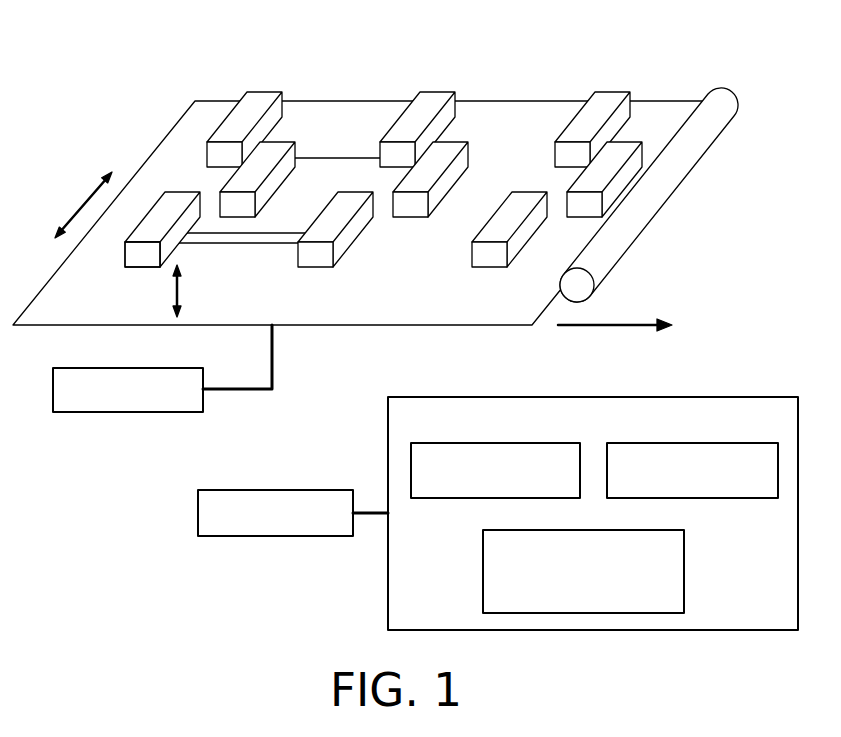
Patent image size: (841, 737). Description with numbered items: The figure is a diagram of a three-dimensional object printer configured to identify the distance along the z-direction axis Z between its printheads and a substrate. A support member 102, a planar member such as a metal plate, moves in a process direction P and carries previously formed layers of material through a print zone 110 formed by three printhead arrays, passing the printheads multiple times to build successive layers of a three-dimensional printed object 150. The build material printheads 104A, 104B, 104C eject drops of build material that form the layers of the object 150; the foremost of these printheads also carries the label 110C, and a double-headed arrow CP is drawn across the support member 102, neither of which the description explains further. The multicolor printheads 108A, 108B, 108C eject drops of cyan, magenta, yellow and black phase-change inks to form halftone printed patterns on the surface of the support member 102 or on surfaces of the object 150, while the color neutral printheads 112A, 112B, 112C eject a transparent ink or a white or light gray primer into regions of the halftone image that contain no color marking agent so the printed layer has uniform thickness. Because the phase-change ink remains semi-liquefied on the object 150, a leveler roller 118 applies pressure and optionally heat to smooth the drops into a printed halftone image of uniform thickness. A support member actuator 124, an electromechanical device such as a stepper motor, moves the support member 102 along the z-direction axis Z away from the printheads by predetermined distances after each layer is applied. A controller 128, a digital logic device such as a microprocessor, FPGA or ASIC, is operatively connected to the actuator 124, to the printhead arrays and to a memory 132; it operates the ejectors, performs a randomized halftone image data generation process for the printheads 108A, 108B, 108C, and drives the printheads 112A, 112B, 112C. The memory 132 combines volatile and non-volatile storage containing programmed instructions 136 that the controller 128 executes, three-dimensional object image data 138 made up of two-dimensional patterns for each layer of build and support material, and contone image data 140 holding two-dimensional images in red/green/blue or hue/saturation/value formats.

The print zone 110 is at (398, 195).
The support member 102 is at (432, 326).
The build material printhead 104A is at (265, 92).
The build material printhead 104B is at (280, 141).
The build material printhead 104C is at (157, 202).
The ejector face of printhead 110C is at (143, 268).
The multicolor phase-change ink printhead 108A is at (438, 92).
The multicolor phase-change ink printhead 108B is at (450, 141).
The multicolor phase-change ink printhead 108C is at (315, 255).
The color neutral material printhead 112A is at (613, 92).
The color neutral material printhead 112B is at (623, 141).
The color neutral material printhead 112C is at (488, 255).
The leveler roller 118 is at (720, 92).
The three-dimensional printed object 150 is at (265, 245).
The support member actuator 124 is at (128, 413).
The controller 128 is at (278, 490).
The memory 132 is at (673, 396).
The programmed instructions 136 is at (495, 443).
The 3D object image data 138 is at (690, 443).
The contone image data 140 is at (684, 572).
The cross-process direction CP is at (82, 203).
The z-direction axis Z is at (180, 292).
The process direction P is at (617, 327).